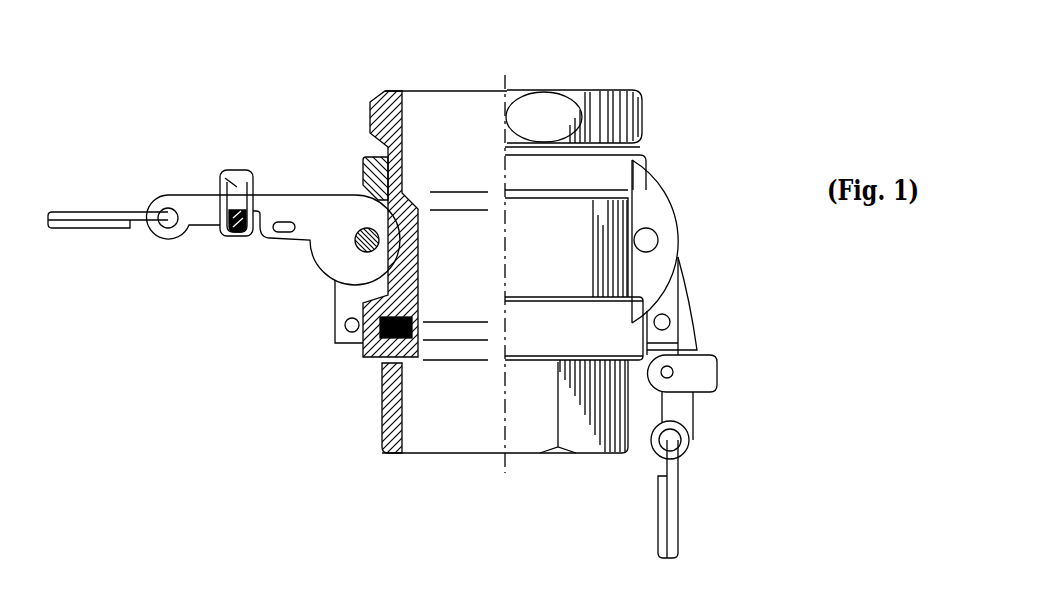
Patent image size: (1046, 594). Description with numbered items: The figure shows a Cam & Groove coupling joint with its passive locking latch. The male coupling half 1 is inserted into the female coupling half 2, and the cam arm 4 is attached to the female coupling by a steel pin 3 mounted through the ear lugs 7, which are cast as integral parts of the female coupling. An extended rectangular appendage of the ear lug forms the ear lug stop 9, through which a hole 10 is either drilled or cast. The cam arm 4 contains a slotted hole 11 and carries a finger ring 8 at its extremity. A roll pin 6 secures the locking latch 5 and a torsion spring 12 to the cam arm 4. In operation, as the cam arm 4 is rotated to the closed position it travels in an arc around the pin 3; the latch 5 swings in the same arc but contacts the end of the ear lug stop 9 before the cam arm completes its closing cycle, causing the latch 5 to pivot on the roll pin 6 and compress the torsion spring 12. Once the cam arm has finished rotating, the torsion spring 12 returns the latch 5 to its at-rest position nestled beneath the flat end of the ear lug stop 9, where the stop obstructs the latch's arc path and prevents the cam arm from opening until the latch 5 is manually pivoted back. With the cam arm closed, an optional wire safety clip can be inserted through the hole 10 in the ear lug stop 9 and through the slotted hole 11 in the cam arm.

The male coupling half 1 is at (623, 88).
The female coupling half 2 is at (618, 167).
The steel pin 3 is at (362, 250).
The cam arm 4 is at (278, 187).
The locking latch 5 is at (230, 170).
The roll pin 6 is at (230, 235).
The ear lugs 7 is at (650, 198).
The finger ring 8 is at (678, 520).
The ear lug stop 9 is at (672, 332).
The hole 10 is at (343, 330).
The slotted hole 11 is at (278, 232).
The torsion spring 12 is at (227, 197).